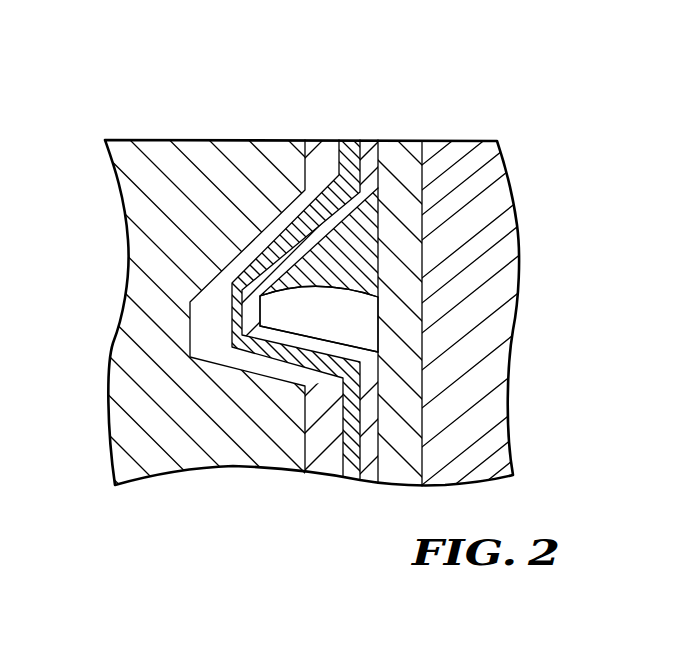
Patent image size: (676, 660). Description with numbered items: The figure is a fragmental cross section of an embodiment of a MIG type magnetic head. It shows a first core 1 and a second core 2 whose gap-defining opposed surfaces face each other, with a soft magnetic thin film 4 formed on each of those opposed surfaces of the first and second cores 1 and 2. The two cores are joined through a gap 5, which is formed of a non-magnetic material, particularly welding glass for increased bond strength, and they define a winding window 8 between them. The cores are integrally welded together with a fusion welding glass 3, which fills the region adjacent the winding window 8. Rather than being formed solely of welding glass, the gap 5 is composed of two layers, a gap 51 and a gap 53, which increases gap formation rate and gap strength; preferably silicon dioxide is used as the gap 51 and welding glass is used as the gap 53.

The first core 1 is at (140, 358).
The second core 2 is at (497, 189).
The fusion welding glass 3 is at (368, 287).
The soft magnetic thin film 4 is at (333, 139).
The gap 5 is at (340, 63).
The gap 51 is at (350, 139).
The gap 53 is at (373, 139).
The winding window 8 is at (342, 330).